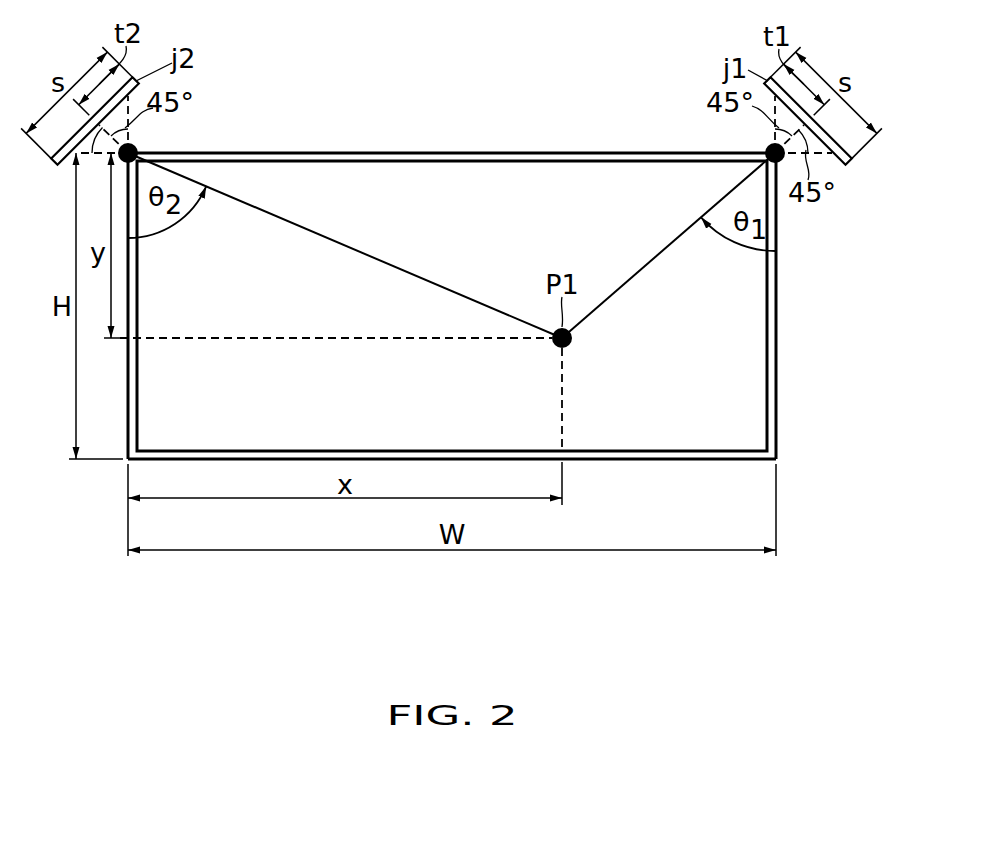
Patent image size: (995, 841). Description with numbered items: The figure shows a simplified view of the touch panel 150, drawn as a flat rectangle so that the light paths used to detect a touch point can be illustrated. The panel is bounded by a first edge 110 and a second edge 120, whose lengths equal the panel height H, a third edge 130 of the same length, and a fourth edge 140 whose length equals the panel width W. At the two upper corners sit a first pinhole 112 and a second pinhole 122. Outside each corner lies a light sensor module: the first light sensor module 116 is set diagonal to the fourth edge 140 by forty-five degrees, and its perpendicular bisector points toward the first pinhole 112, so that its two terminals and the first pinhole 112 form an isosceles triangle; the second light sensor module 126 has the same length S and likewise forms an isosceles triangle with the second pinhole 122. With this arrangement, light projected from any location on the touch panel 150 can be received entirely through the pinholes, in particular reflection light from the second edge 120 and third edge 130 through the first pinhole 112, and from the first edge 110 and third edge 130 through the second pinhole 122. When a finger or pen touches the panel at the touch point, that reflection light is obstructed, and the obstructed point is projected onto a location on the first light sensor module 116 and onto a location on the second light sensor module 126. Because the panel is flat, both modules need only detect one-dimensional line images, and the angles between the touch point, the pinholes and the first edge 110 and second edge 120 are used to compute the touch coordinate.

The first edge 110 is at (778, 418).
The first pinhole 112 is at (766, 149).
The first light sensor module 116 is at (848, 165).
The second edge 120 is at (127, 421).
The second pinhole 122 is at (138, 148).
The second light sensor module 126 is at (58, 165).
The third edge 130 is at (700, 461).
The fourth edge 140 is at (568, 151).
The touch panel 150 is at (676, 412).